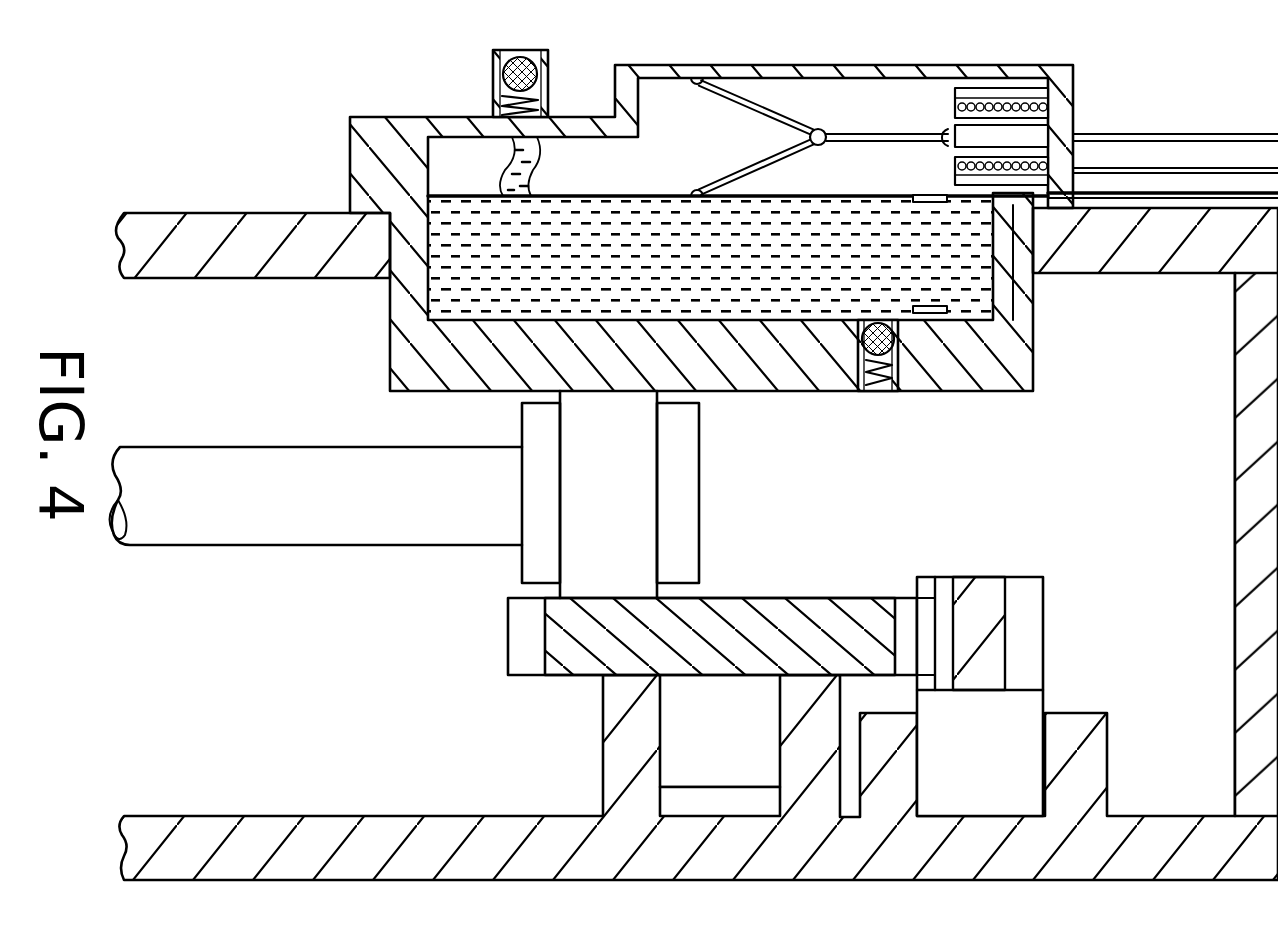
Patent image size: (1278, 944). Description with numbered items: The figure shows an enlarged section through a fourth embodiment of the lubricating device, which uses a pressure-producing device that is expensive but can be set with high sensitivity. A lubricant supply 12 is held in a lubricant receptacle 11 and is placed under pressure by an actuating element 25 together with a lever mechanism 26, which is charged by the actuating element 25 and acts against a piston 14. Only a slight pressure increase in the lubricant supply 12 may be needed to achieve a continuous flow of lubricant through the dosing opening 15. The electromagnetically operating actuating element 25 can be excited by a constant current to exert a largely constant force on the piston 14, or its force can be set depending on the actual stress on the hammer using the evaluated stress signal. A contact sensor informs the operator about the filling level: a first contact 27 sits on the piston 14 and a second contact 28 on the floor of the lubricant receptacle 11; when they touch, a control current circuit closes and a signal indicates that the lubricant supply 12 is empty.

The lubricant receptacle 11 is at (398, 135).
The lubricant supply 12 is at (595, 208).
The piston 14 is at (655, 195).
The dosing opening 15 is at (878, 393).
The actuating element 25 is at (1013, 133).
The lever mechanism 26 is at (763, 100).
The first contact 27 is at (925, 200).
The second contact 28 is at (928, 313).